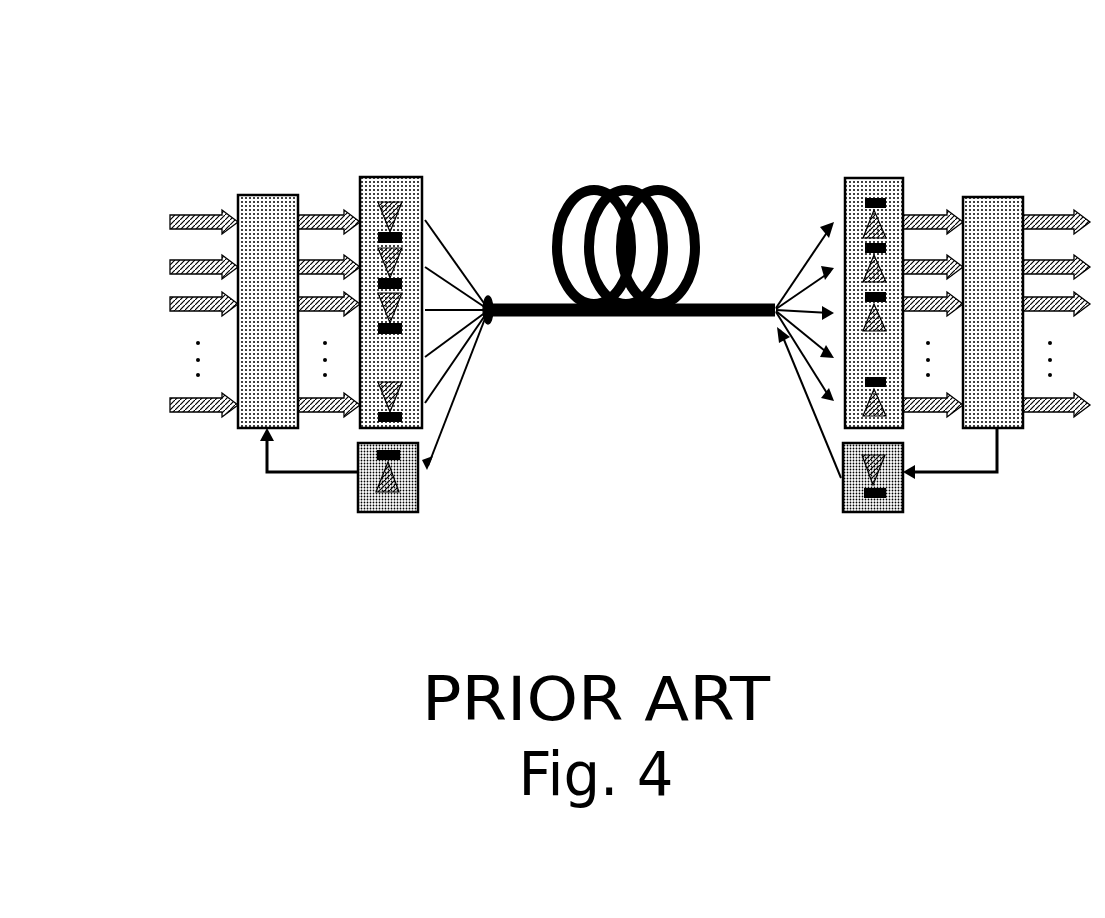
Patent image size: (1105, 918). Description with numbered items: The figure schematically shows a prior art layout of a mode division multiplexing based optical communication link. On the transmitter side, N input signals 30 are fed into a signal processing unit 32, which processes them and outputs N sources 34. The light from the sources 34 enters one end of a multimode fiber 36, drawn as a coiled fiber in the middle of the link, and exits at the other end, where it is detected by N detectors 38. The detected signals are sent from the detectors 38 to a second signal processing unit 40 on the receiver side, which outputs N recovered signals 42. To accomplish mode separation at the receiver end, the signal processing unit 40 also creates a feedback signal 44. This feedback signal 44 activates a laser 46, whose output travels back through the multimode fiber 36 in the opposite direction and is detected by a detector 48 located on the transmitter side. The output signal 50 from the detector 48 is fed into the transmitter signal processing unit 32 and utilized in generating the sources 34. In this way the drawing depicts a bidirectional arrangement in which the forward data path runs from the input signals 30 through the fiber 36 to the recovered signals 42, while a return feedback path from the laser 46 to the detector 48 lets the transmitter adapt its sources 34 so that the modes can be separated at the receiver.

The input signals 30 is at (200, 415).
The signal processing unit 32 is at (282, 185).
The sources 34 is at (403, 172).
The multimode fiber 36 is at (516, 302).
The detectors 38 is at (865, 170).
The signal processing unit 40 is at (987, 195).
The recovered signals 42 is at (1060, 420).
The feedback signal 44 is at (963, 500).
The laser 46 is at (870, 513).
The detector 48 is at (402, 513).
The output signal 50 is at (307, 477).